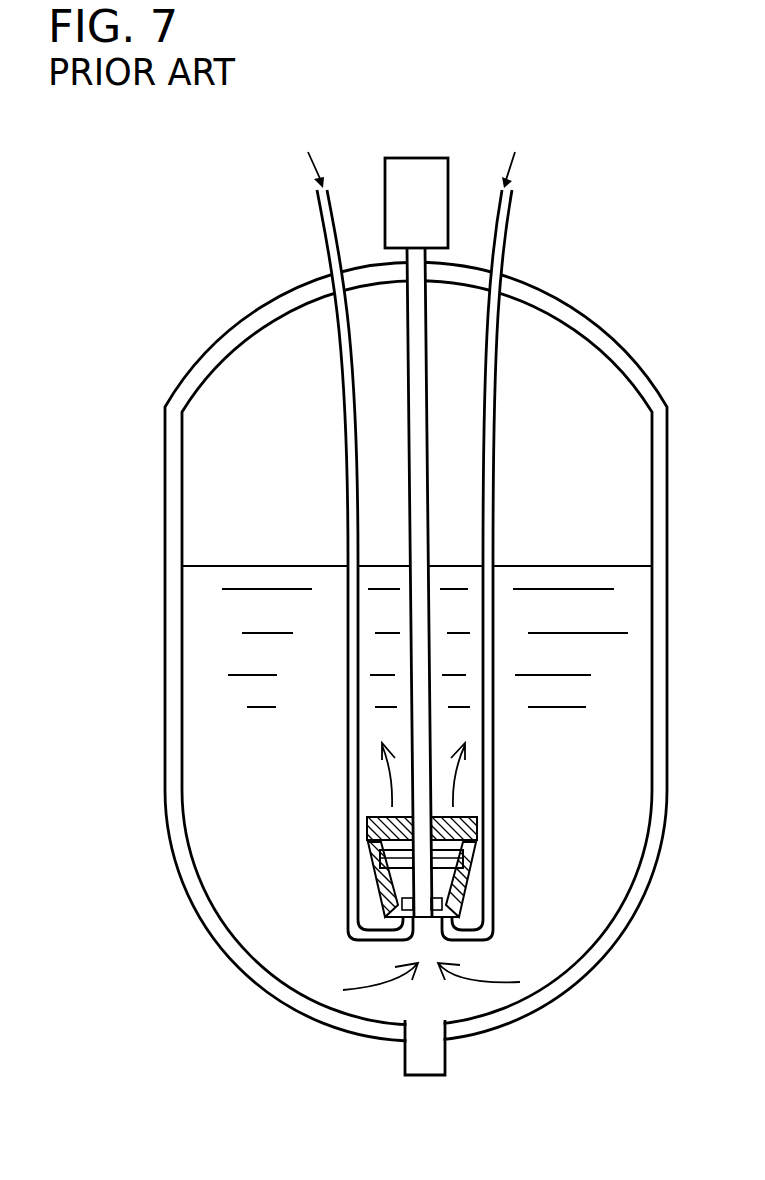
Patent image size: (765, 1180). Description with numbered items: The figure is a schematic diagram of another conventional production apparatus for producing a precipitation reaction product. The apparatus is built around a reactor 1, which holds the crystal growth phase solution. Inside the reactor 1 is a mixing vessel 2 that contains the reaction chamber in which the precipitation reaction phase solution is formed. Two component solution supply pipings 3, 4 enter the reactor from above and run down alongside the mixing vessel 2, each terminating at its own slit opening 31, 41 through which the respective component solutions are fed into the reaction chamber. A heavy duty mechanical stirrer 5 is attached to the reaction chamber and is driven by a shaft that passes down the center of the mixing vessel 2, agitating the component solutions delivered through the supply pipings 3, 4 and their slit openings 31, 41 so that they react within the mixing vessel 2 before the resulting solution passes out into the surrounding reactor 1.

The reactor 1 is at (167, 662).
The mixing vessel 2 is at (377, 890).
The component solution supply piping 3 is at (323, 233).
The component solution supply piping 4 is at (506, 221).
The heavy duty mechanical stirrer 5 is at (445, 882).
The slit opening 31 is at (363, 945).
The slit opening 41 is at (487, 942).